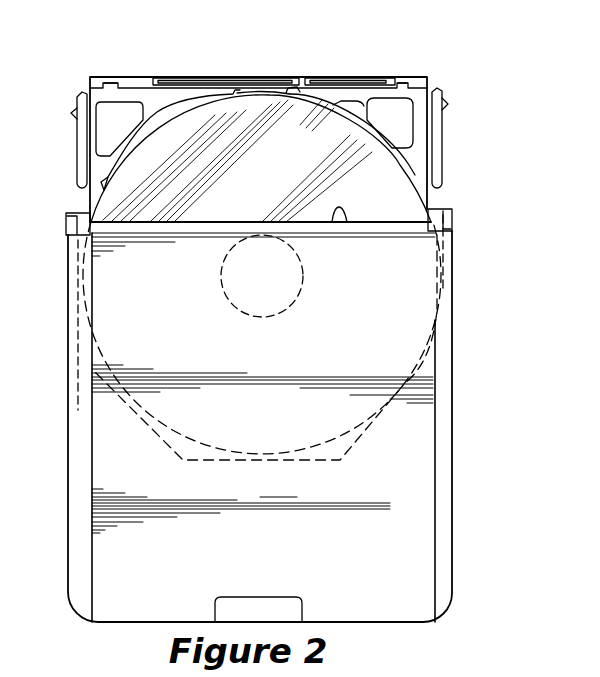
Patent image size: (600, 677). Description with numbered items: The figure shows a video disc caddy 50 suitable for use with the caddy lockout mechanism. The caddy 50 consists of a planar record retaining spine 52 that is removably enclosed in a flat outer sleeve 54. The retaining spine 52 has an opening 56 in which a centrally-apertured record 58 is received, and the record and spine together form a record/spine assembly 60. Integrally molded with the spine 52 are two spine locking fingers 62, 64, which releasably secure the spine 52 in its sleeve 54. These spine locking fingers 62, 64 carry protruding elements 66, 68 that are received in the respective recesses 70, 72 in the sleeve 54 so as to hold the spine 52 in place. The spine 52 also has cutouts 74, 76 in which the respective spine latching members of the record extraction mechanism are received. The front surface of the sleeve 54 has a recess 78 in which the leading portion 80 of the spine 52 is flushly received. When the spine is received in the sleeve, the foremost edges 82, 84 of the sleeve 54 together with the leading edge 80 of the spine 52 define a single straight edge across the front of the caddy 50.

The caddy 50 is at (460, 197).
The record retaining spine 52 is at (178, 92).
The outer sleeve 54 is at (428, 352).
The opening 56 is at (400, 167).
The record 58 is at (108, 197).
The record/spine assembly 60 is at (447, 78).
The spine locking finger 62 is at (77, 145).
The spine locking finger 64 is at (443, 148).
The protruding element 66 is at (74, 112).
The protruding element 68 is at (449, 104).
The recess 70 is at (72, 226).
The recess 72 is at (449, 232).
The cutout 74 is at (115, 81).
The cutout 76 is at (404, 81).
The recess 78 is at (333, 222).
The leading portion 80 is at (248, 78).
The foremost edge 82 is at (67, 211).
The foremost edge 84 is at (440, 200).